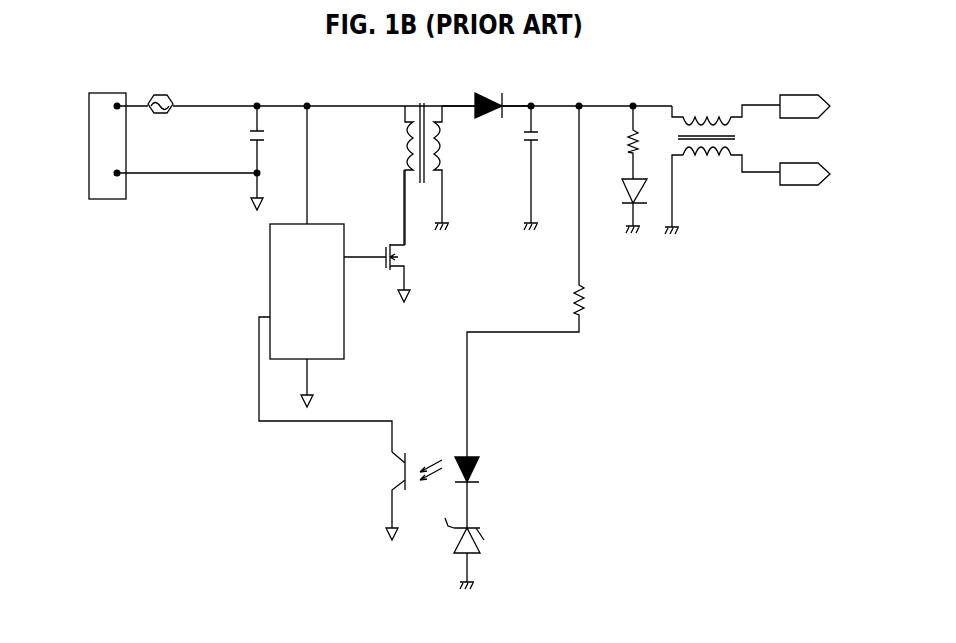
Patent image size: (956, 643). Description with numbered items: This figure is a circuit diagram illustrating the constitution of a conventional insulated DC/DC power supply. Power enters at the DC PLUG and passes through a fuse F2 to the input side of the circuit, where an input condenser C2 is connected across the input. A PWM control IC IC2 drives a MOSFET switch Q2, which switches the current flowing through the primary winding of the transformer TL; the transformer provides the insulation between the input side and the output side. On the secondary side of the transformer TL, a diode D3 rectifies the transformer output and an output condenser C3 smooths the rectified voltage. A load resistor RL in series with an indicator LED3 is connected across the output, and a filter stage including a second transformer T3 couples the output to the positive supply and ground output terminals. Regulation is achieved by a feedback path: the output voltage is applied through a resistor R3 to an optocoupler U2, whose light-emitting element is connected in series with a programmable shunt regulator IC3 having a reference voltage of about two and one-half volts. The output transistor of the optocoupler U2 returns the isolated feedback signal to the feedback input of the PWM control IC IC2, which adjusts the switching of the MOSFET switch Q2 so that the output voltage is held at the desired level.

The DC plug connector DC PLUG is at (162, 138).
The fuse F2 is at (160, 114).
The input condenser C2 is at (268, 158).
The PWM control IC IC2 is at (325, 279).
The MOSFET switch Q2 is at (389, 282).
The transformer TL is at (427, 164).
The diode D3 is at (486, 95).
The output condenser C3 is at (543, 168).
The load resistor RL is at (622, 142).
The indicator LED LED3 is at (615, 206).
The feedback resistor R3 is at (538, 281).
The output filter transformer T3 is at (747, 162).
The optocoupler U2 is at (432, 489).
The programmable shunt regulator IC3 is at (481, 553).